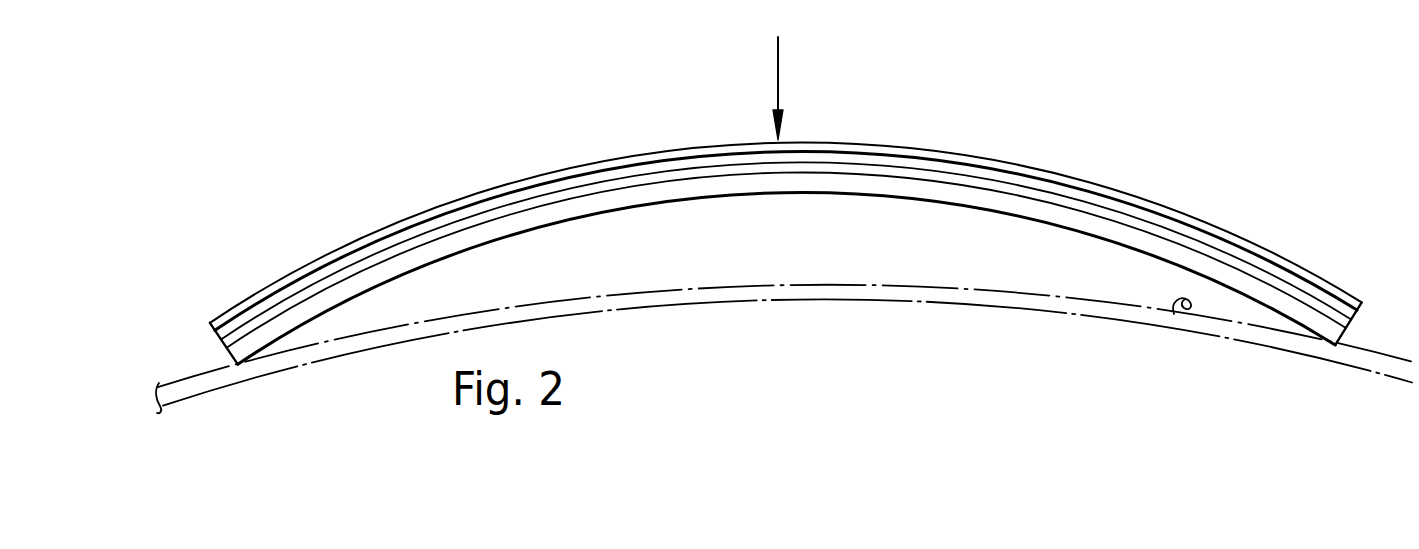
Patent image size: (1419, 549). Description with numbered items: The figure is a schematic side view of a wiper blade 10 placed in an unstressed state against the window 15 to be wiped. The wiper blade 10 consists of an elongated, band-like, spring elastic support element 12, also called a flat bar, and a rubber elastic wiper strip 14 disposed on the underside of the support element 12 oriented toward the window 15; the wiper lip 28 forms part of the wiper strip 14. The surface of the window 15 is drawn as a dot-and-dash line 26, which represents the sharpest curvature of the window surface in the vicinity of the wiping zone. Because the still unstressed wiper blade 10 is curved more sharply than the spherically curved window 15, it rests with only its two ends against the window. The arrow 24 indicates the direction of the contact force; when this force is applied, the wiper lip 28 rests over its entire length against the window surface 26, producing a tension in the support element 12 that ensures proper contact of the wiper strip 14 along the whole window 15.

The wiper blade 10 is at (1040, 154).
The support element 12 is at (1160, 204).
The wiper strip 14 is at (1067, 220).
The wiper lip 28 is at (985, 209).
The arrow 24 is at (778, 80).
The window 15 is at (1216, 348).
The dot-and-dash line 26 is at (1169, 318).